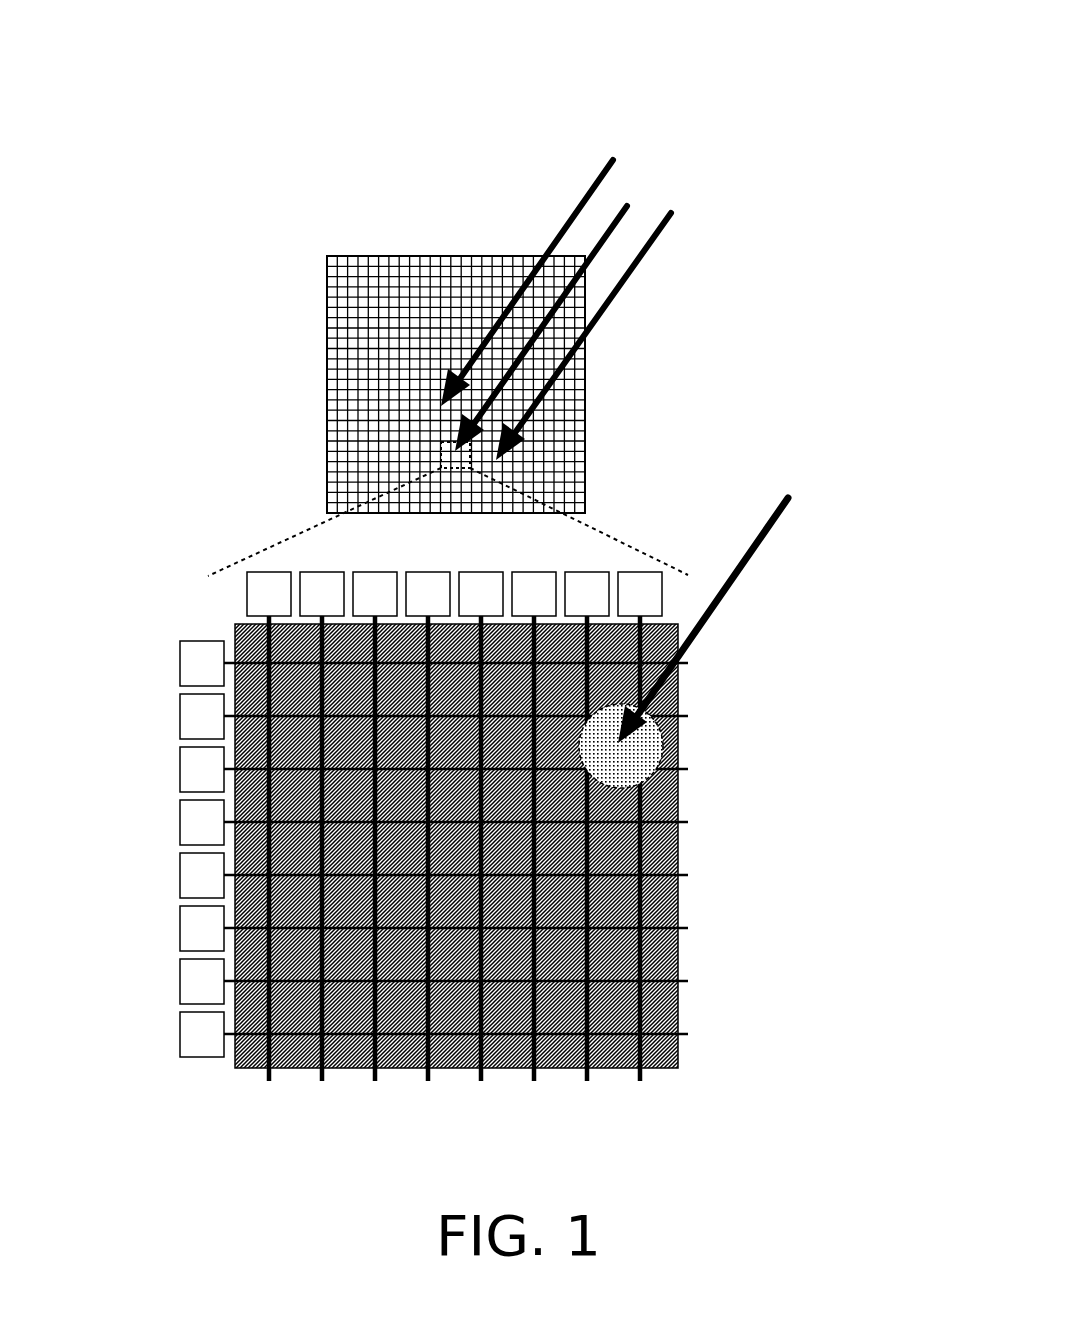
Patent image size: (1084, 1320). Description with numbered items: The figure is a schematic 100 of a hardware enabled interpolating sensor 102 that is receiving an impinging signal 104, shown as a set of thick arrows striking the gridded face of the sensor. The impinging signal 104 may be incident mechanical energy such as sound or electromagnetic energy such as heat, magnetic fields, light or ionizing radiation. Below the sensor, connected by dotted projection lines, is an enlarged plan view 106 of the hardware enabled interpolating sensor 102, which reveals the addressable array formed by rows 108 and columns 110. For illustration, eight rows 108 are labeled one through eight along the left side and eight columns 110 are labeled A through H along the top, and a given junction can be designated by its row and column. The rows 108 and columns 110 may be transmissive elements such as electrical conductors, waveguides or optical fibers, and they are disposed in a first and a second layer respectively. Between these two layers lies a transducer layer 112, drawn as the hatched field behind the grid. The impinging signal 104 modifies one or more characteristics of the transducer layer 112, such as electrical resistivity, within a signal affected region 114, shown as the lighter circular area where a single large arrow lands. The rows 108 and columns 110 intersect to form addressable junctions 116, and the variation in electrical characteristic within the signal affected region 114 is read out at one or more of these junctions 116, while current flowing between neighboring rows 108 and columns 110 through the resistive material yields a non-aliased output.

The schematic 100 is at (782, 60).
The hardware enabled interpolating sensor 102 is at (360, 277).
The impinging signal 104 is at (577, 290).
The enlarged plan view 106 is at (277, 510).
The rows 108 is at (490, 849).
The columns 110 is at (441, 858).
The transducer layer 112 is at (453, 1060).
The signal affected region 114 is at (610, 750).
The junctions 116 is at (640, 1030).